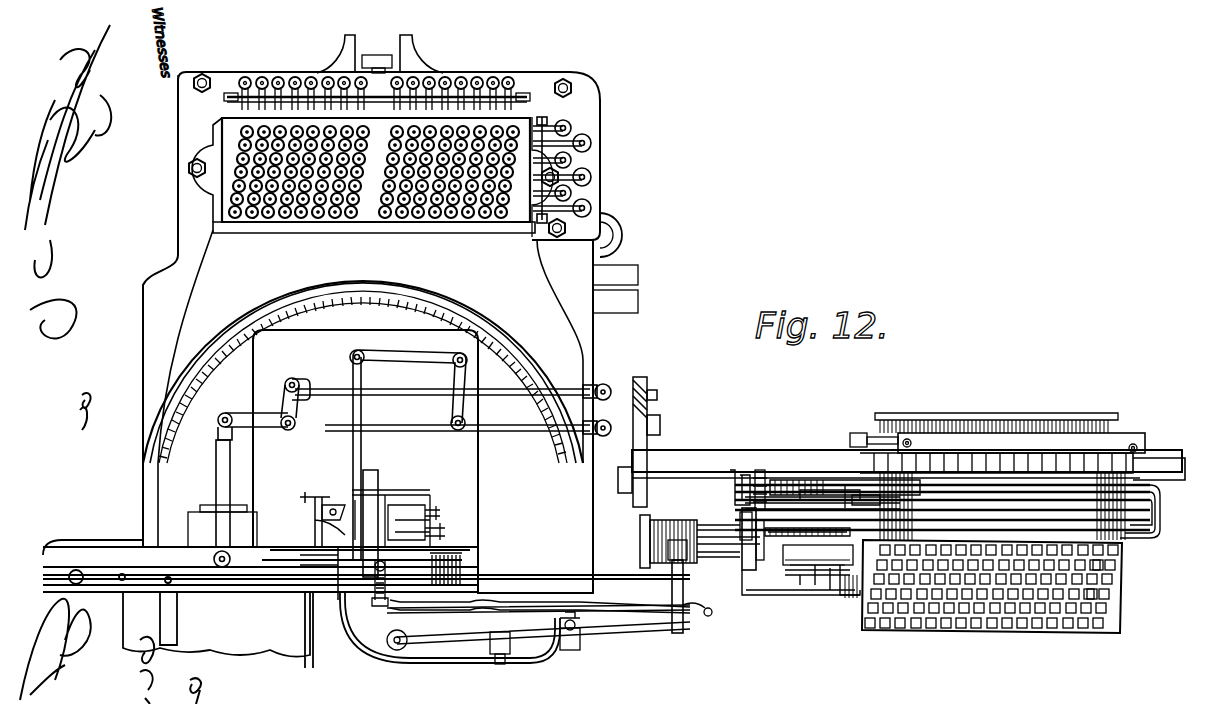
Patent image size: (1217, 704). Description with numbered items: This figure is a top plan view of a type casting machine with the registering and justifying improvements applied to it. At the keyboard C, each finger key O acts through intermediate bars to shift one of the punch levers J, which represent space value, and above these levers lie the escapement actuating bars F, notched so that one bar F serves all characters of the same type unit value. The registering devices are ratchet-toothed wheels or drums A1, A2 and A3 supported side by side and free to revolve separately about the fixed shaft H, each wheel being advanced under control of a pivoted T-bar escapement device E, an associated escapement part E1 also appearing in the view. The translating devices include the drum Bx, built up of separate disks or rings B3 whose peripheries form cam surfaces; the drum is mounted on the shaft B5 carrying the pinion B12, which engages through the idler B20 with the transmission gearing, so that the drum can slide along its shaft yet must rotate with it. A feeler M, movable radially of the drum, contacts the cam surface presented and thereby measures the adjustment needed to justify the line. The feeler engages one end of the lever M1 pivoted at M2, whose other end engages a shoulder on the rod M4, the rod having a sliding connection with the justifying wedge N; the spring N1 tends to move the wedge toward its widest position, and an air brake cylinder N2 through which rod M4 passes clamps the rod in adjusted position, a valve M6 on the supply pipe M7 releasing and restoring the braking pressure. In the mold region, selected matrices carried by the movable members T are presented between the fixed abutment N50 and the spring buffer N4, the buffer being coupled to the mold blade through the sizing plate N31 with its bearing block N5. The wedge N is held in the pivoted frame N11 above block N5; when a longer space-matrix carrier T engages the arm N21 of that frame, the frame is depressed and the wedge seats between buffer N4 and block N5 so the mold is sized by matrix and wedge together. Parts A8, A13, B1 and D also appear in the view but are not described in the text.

The movable matrix-carrying member T is at (330, 305).
The justifying wedge N is at (378, 490).
The fixed abutment N50 is at (345, 505).
The spring buffer N4 is at (385, 512).
The bearing block N5 is at (438, 510).
The sizing plate N31 is at (445, 531).
The pivoted frame N11 is at (448, 565).
The spring N1 is at (388, 584).
The air brake cylinder N2 is at (420, 598).
The arm of pivoted frame N21 is at (320, 590).
The wedge-adjusting rod M4 is at (370, 620).
The supply pipe M7 is at (600, 610).
The lever M1 is at (650, 626).
The lever pivot M2 is at (580, 622).
The feeler M is at (672, 575).
The valve M6 is at (710, 608).
The fixed shaft H is at (792, 455).
The ratchet-toothed wheel A3 is at (770, 505).
The ratchet-toothed wheel A1 is at (765, 495).
The ratchet-toothed wheel A2 is at (775, 503).
The escapement device E is at (735, 490).
The escapement bar E1 is at (845, 495).
The escapement actuating bar F is at (862, 500).
The punch lever J is at (912, 497).
The cam drum Bx is at (672, 520).
The disk or ring B3 is at (705, 528).
The bearing A8 is at (740, 520).
The drum shaft B5 is at (725, 545).
The pinion B12 is at (755, 555).
The idler B20 is at (778, 592).
The escapement wheel housing B1 is at (838, 553).
The rack bar A13 is at (852, 534).
The escapement dog D is at (840, 572).
The keyboard C is at (992, 586).
The finger key O is at (1100, 594).